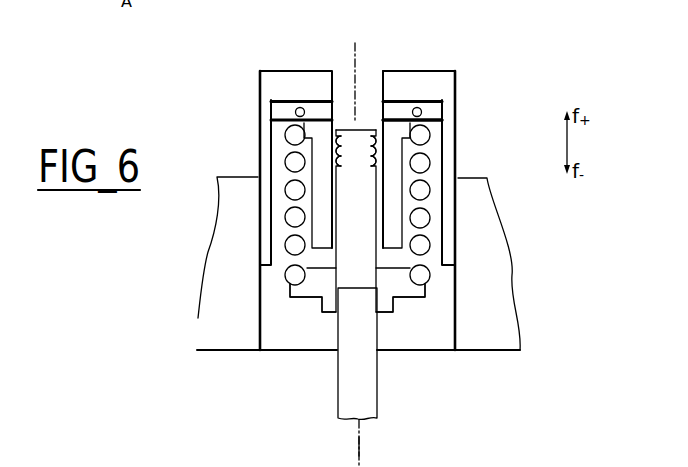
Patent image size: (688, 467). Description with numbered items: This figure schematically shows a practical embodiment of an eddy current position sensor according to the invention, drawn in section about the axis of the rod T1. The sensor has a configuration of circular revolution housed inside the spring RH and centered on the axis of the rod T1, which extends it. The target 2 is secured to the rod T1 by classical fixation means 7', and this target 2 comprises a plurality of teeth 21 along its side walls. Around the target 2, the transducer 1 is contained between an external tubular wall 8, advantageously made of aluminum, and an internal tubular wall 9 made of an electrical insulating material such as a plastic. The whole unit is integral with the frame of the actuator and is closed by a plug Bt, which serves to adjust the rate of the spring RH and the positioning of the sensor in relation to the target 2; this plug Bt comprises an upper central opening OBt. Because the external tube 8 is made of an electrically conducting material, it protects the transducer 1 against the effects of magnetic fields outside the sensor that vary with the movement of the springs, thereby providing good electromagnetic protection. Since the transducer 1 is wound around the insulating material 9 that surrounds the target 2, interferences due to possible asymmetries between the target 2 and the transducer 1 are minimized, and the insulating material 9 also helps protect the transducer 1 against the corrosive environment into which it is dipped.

The transducer 1 is at (323, 204).
The target 2 is at (360, 130).
The fixation means 7' is at (357, 348).
The external tubular wall 8 is at (432, 150).
The internal tubular wall 9 is at (395, 130).
The teeth 21 is at (377, 165).
The plug Bt is at (290, 83).
The upper central opening OBt is at (380, 82).
The spring RH is at (290, 283).
The rod T1 is at (380, 378).